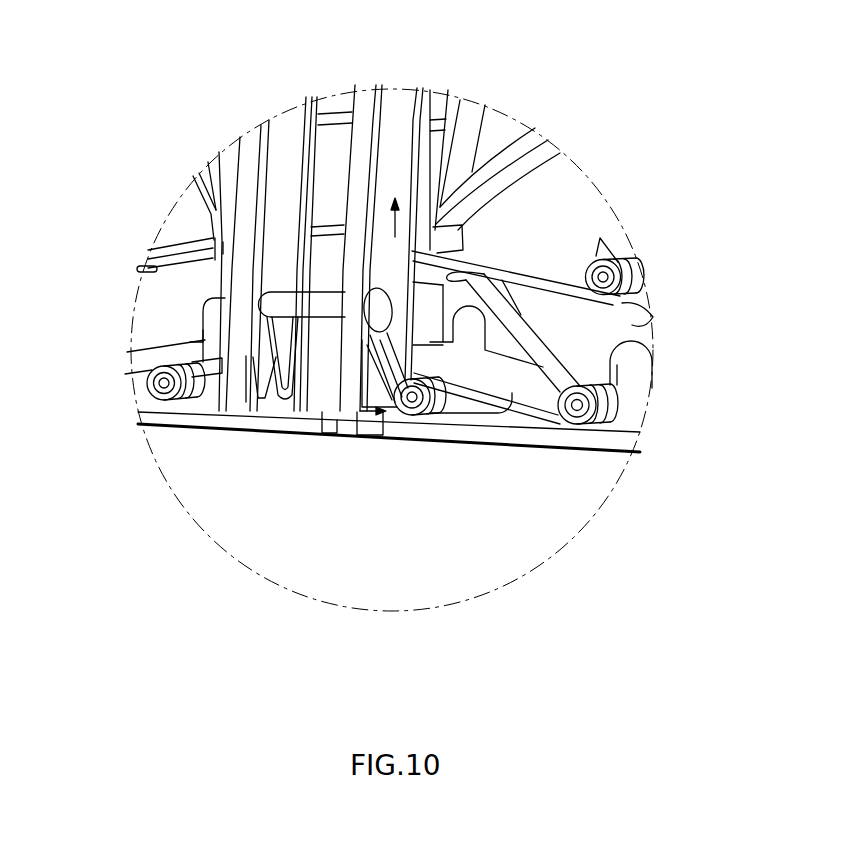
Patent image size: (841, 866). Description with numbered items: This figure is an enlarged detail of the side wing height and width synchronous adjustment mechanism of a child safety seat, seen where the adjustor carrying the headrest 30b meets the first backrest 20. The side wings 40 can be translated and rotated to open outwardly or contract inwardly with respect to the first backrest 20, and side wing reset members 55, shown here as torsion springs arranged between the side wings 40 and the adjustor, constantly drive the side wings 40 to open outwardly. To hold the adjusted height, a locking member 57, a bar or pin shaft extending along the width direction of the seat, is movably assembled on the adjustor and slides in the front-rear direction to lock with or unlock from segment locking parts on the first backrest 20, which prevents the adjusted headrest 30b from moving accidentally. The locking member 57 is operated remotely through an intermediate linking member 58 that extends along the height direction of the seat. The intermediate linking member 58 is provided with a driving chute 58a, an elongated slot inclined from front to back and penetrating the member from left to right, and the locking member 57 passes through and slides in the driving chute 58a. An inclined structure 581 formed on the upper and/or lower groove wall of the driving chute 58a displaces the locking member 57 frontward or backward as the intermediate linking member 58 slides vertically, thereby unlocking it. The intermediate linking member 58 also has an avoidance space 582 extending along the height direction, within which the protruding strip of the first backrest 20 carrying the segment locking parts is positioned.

The first backrest 20 is at (505, 510).
The headrest 30b is at (537, 427).
The side wing 40 is at (180, 220).
The side wing reset member 55 is at (567, 378).
The locking member 57 is at (277, 305).
The intermediate linking member 58 is at (362, 177).
The driving chute 58a is at (262, 375).
The inclined structure 581 is at (270, 348).
The avoidance space 582 is at (337, 130).